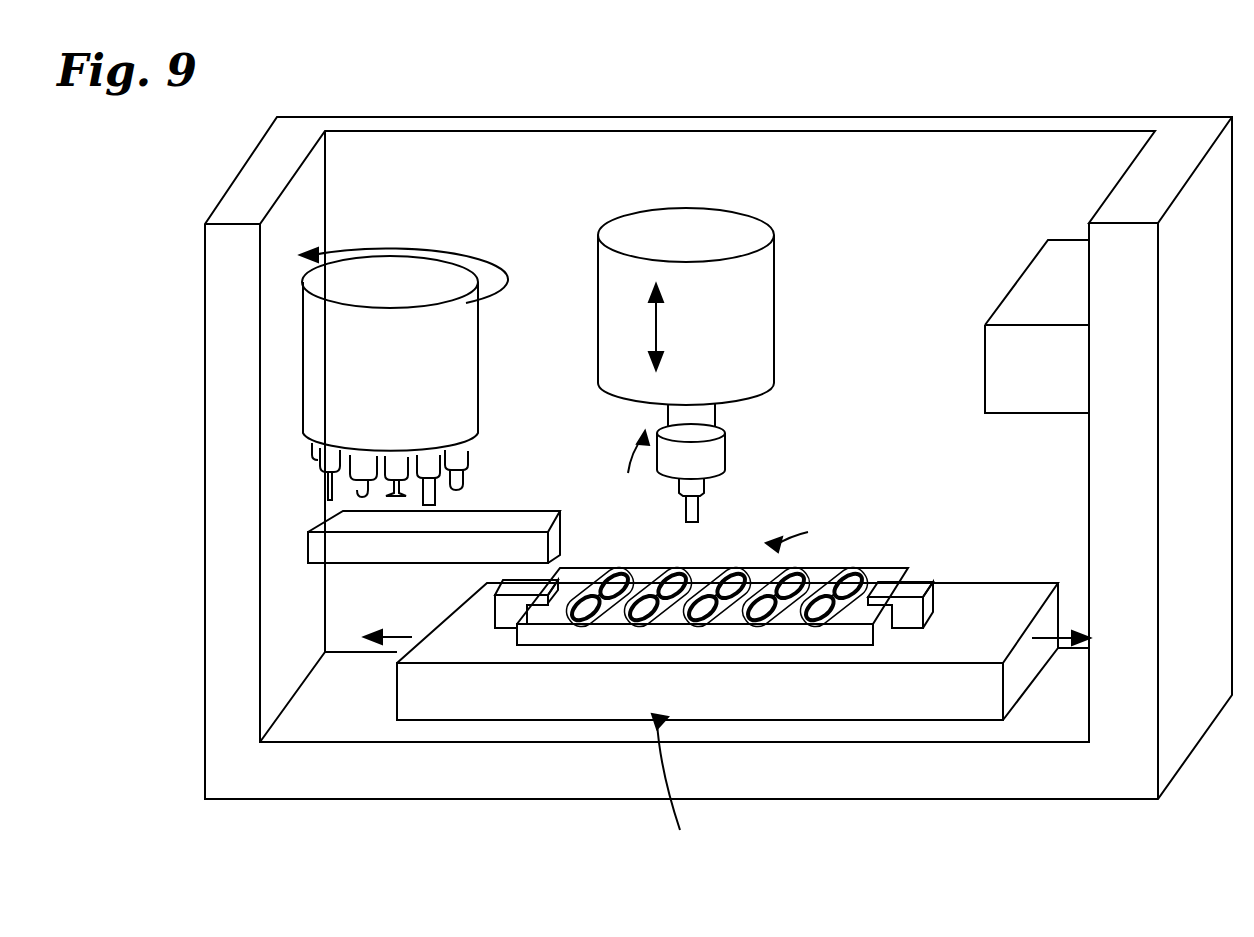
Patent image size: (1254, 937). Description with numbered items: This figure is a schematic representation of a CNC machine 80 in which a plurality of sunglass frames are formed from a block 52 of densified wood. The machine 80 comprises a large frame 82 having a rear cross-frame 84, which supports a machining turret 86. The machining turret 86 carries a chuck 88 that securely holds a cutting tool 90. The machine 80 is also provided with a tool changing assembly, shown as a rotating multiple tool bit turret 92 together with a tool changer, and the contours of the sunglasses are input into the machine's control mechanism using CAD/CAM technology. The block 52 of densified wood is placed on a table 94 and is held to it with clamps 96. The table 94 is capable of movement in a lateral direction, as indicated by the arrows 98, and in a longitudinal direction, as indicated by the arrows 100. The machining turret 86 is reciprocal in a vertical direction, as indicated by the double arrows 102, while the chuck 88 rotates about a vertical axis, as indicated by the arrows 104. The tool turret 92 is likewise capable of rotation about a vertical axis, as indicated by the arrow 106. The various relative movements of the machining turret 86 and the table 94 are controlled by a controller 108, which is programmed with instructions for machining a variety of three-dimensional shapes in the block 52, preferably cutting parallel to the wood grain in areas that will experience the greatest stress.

The block 52 is at (890, 568).
The CNC machine 80 is at (1021, 110).
The frame 82 is at (203, 422).
The rear cross-frame 84 is at (380, 119).
The machining turret 86 is at (760, 232).
The chuck 88 is at (720, 453).
The cutting tool 90 is at (700, 508).
The rotating multiple tool bit turret 92 is at (465, 361).
The table 94 is at (500, 512).
The clamps 96 is at (505, 612).
The arrows 98 is at (390, 640).
The arrows 100 is at (758, 690).
The double arrows 102 is at (659, 326).
The arrows 104 is at (618, 470).
The arrow 106 is at (449, 252).
The controller 108 is at (1040, 272).